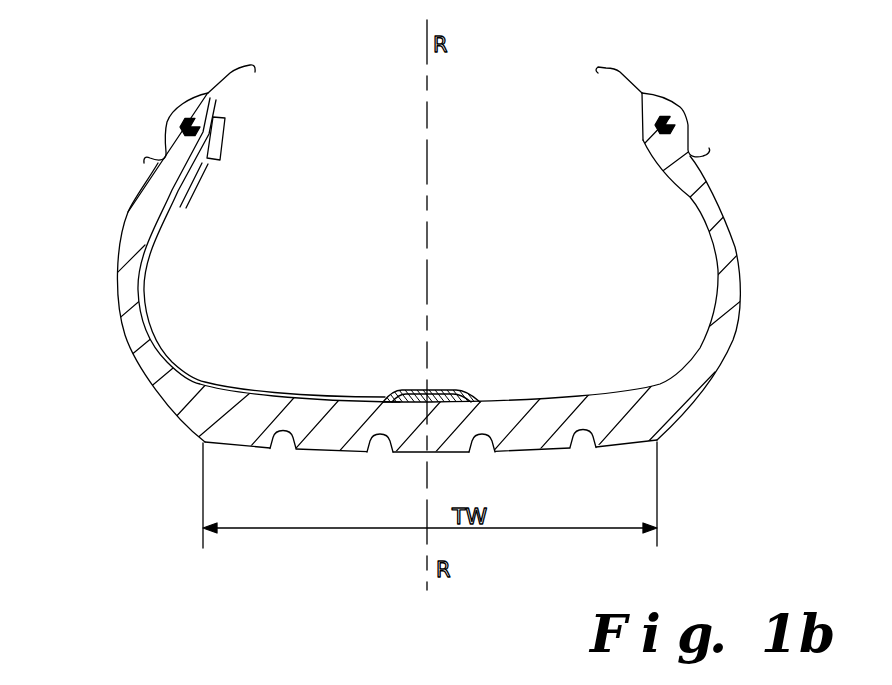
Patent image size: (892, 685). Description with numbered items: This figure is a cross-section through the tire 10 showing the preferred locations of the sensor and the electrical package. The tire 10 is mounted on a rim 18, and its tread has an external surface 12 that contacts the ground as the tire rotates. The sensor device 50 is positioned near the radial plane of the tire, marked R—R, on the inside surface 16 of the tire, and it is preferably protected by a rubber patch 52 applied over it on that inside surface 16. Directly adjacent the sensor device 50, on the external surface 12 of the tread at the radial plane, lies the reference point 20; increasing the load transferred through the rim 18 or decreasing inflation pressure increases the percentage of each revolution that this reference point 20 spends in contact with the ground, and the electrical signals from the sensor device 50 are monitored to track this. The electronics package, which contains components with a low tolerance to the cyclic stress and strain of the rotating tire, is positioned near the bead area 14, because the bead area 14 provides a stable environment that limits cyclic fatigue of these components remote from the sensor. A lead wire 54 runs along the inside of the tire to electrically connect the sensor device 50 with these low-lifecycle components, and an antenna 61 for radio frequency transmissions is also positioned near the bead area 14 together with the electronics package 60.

The tire 10 is at (750, 199).
The external surface of the tire's tread 12 is at (243, 446).
The bead area 14 is at (132, 180).
The inside surface 16 is at (208, 386).
The rim 18 is at (620, 70).
The reference point 20 is at (432, 453).
The sensor device 50 is at (445, 394).
The rubber patch 52 is at (473, 397).
The lead wire 54 is at (148, 316).
The bead region patch 60 is at (226, 118).
The antenna 61 is at (200, 184).